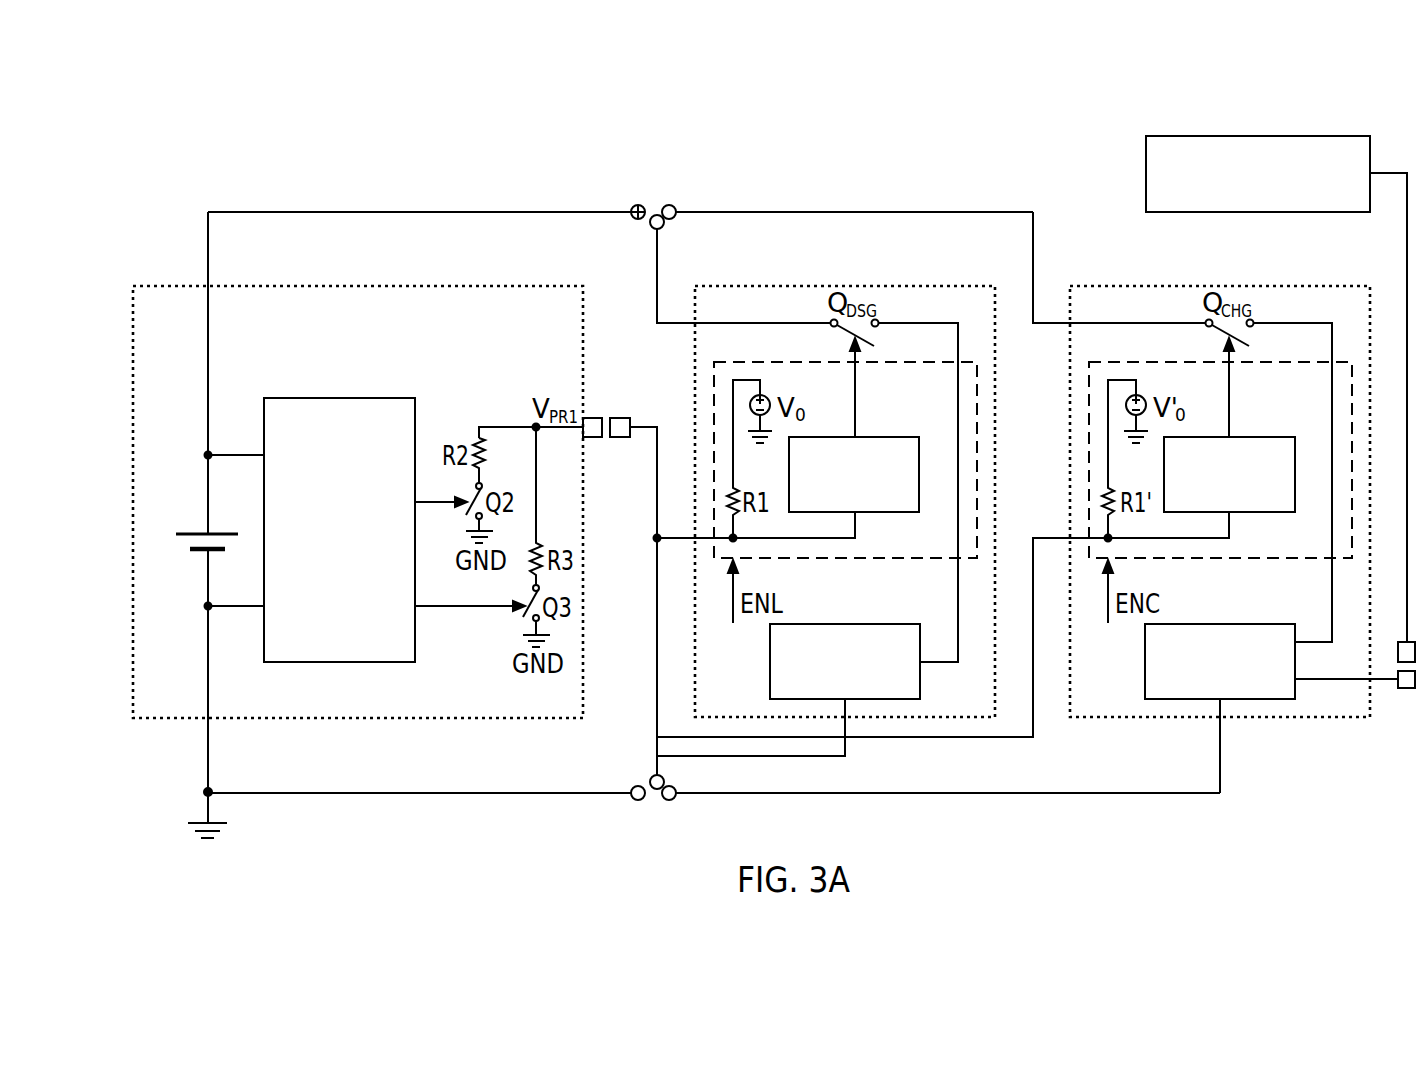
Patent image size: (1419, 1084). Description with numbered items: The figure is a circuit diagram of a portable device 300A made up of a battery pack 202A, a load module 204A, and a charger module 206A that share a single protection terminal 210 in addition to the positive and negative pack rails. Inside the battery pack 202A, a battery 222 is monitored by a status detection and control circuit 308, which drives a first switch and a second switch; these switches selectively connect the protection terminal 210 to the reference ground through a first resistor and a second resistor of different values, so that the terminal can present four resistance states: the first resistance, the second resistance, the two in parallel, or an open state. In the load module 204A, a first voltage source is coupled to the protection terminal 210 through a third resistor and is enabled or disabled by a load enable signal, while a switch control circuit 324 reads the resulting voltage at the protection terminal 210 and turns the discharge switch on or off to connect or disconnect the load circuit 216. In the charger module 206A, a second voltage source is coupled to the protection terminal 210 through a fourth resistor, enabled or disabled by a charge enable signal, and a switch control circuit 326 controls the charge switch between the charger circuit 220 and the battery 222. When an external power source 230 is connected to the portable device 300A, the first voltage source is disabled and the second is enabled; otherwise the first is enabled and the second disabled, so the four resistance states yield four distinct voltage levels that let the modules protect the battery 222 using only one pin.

The portable device 300A is at (208, 197).
The battery pack 202A is at (180, 286).
The load module 204A is at (775, 286).
The charger module 206A is at (1150, 286).
The external power source 230 is at (1313, 136).
The status detection and control circuit 308 is at (320, 398).
The battery 222 is at (208, 533).
The protection terminal 210 is at (593, 418).
The switch control circuit 324 is at (878, 437).
The switch control circuit 326 is at (1253, 437).
The load circuit 216 is at (870, 624).
The charger circuit 220 is at (1247, 624).